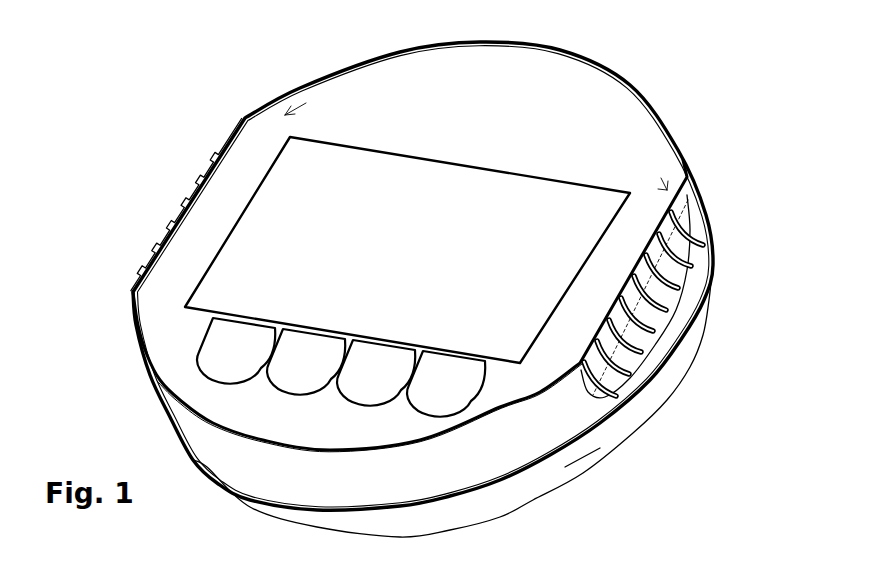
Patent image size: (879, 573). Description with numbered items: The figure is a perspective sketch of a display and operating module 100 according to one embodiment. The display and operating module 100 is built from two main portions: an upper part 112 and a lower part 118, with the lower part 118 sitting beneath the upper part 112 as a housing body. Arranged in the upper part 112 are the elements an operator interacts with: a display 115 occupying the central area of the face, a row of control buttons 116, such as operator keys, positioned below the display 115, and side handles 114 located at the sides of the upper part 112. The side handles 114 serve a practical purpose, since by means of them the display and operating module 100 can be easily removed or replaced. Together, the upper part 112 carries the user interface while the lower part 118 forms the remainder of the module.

The display and operating module 100 is at (159, 78).
The upper part 112 is at (598, 103).
The side handles 114 is at (180, 216).
The display 115 is at (427, 258).
The control buttons 116 is at (170, 327).
The lower part 118 is at (565, 467).